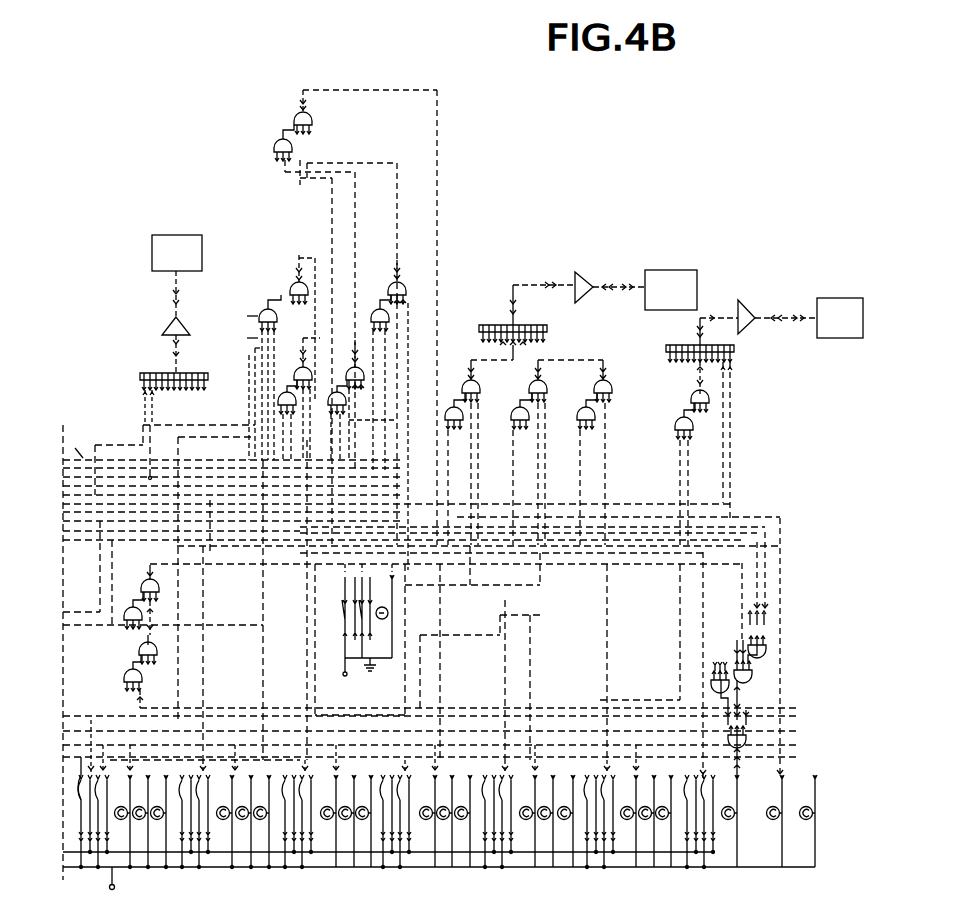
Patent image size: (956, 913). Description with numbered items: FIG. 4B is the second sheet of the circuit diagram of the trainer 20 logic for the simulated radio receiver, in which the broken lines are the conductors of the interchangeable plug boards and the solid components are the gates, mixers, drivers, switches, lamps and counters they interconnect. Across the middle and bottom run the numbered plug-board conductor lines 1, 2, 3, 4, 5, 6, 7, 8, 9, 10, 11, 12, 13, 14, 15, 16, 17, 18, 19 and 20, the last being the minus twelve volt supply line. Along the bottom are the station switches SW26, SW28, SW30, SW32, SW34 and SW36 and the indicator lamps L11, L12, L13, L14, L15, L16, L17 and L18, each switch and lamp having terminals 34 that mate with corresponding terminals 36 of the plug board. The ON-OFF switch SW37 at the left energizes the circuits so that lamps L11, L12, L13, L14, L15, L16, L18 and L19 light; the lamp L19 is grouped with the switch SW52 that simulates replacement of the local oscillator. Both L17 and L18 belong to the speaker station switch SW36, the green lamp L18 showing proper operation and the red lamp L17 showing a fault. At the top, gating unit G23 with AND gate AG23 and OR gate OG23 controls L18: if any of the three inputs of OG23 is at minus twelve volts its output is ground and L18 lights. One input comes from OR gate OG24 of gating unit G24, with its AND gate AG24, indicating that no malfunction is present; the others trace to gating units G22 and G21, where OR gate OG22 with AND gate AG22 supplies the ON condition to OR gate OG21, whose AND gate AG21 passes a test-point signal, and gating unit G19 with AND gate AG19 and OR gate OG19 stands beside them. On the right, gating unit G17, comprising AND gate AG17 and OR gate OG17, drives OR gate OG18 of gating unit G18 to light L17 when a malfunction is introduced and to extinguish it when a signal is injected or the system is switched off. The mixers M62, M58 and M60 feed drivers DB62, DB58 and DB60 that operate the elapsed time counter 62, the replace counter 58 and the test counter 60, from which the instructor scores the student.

The control bus line 1 is at (76, 448).
The bus line 2 is at (223, 455).
The bus line 3 is at (223, 466).
The bus line 4 is at (223, 476).
The bus line 5 is at (223, 486).
The bus line 6 is at (223, 496).
The bus line 7 is at (389, 506).
The bus line 8 is at (223, 515).
The bus line 9 is at (223, 524).
The bus line 10 is at (170, 534).
The bus line 11 is at (95, 535).
The bus line 12 is at (72, 613).
The bus line 13 is at (153, 626).
The bus line 14 is at (89, 711).
The bus line 15 is at (422, 717).
The bus line 16 is at (422, 732).
The bus line 17 is at (423, 746).
The bus line 18 is at (423, 759).
The bus line 19 is at (65, 852).
The trainer 20 is at (66, 867).
The terminals 34 is at (244, 315).
The terminals 36 is at (244, 339).
The replace counter 58 is at (660, 290).
The test counter 60 is at (828, 305).
The elapsed time counter 62 is at (190, 256).
The driver/buffer for unit 58 DB58 is at (584, 278).
The driver DB60 is at (746, 310).
The driver DB62 is at (159, 322).
The register M58 is at (488, 325).
The mixer M60 is at (734, 350).
The mixer M62 is at (208, 378).
The gate G17 is at (779, 607).
The gate G18 is at (766, 720).
The gate G19 is at (348, 376).
The gate G21 is at (267, 376).
The gate G22 is at (259, 316).
The gating unit G23 is at (289, 125).
The gate G24 is at (395, 283).
The AND gate AG17 is at (770, 645).
The AND gate of G19 AG19 is at (331, 386).
The AND gate AG21 is at (277, 400).
The AND gate AG22 is at (281, 291).
The AND gate of G23 AG23 is at (272, 147).
The AND gate of G24 AG24 is at (376, 310).
The OR gate OG17 is at (752, 668).
The OR gate OG18 is at (748, 732).
The OR gate of G19 OG19 is at (352, 368).
The OR gate OG21 is at (302, 371).
The OR gate OG22 is at (290, 283).
The OR gate OG23 is at (307, 118).
The OR gate OG24 is at (404, 284).
The switch SW26 is at (177, 797).
The switch SW28 is at (279, 797).
The switch SW30 is at (377, 797).
The switch SW32 is at (479, 797).
The switch SW34 is at (581, 797).
The switch SW36 is at (681, 797).
The ON-OFF switch SW37 is at (83, 765).
The switch SW52 is at (344, 579).
The lamp L11 is at (120, 806).
The lamp L12 is at (224, 806).
The lamp L13 is at (327, 806).
The lamp L14 is at (425, 806).
The lamp L15 is at (525, 806).
The lamp L16 is at (627, 806).
The lamp L17 is at (726, 806).
The lamp L18 is at (766, 809).
The lamp L19 is at (381, 607).